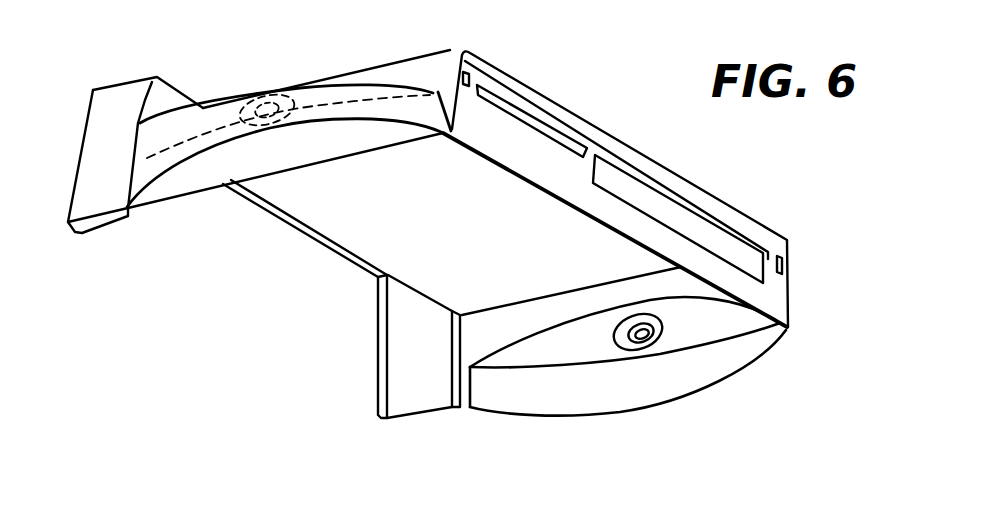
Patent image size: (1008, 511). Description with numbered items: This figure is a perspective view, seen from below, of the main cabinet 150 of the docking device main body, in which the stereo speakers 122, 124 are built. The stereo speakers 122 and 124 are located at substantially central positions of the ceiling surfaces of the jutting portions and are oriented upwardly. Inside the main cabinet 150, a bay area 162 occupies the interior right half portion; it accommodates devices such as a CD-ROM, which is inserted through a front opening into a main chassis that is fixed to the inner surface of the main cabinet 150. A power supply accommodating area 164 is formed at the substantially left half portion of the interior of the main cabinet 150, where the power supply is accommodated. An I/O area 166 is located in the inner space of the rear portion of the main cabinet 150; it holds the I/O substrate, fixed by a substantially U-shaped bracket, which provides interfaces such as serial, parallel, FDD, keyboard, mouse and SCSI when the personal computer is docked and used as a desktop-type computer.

The stereo speaker 122 is at (288, 102).
The stereo speaker 124 is at (660, 344).
The main cabinet 150 is at (569, 113).
The bay area 162 is at (578, 348).
The power supply accommodating area 164 is at (365, 220).
The I/O area 166 is at (245, 236).